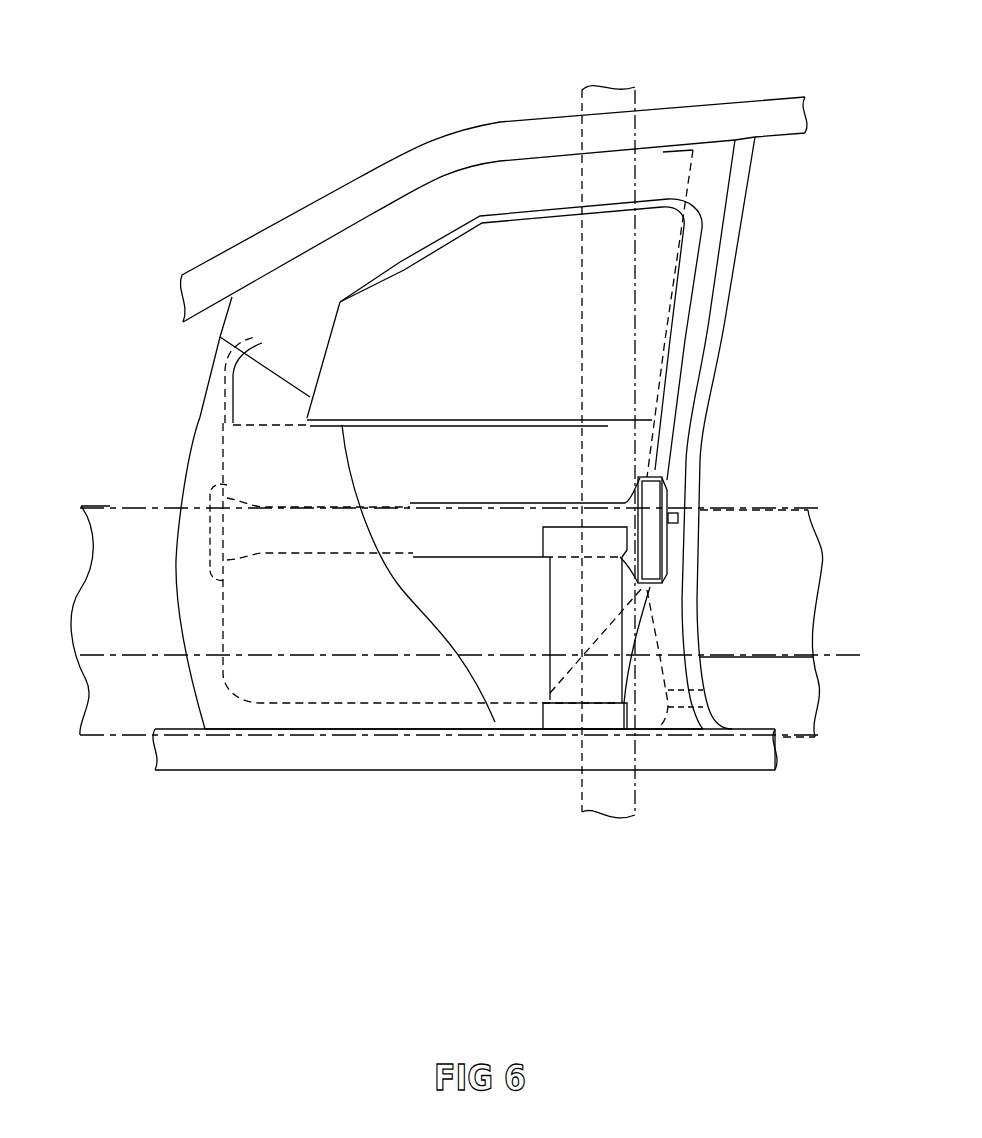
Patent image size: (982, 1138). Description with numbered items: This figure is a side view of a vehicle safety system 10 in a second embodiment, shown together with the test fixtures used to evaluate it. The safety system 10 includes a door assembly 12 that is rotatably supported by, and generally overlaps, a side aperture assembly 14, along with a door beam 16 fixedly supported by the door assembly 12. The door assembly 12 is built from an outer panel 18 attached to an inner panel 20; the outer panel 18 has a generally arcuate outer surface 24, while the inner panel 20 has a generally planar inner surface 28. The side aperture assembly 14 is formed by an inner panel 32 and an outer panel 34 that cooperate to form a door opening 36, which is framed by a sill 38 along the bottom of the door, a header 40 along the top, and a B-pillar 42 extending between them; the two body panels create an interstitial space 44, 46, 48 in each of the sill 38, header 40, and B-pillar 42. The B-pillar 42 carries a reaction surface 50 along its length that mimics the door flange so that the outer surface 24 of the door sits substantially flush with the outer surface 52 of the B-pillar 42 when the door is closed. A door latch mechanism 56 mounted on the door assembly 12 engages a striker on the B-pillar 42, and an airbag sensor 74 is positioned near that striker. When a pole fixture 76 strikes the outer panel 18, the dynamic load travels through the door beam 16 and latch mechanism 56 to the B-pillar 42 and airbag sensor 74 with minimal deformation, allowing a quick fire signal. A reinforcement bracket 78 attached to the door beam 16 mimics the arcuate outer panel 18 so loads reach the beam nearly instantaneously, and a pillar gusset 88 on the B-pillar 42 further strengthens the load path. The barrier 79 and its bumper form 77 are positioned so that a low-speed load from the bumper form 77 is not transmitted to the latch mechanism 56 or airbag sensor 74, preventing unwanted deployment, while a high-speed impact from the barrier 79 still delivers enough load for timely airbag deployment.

The vehicle safety system 10 is at (570, 470).
The door assembly 12 is at (262, 268).
The side aperture assembly 14 is at (748, 130).
The door beam 16 is at (500, 565).
The outer panel 18 is at (370, 632).
The inner panel 20 is at (497, 460).
The outer surface 24 is at (272, 630).
The planar inner surface 28 is at (450, 455).
The inner panel 32 is at (733, 205).
The outer panel 34 is at (708, 672).
The door opening 36 is at (667, 150).
The sill 38 is at (520, 753).
The header 40 is at (483, 132).
The B-pillar 42 is at (708, 360).
The interstitial space 44 is at (442, 753).
The interstitial space 46 is at (377, 182).
The interstitial space 48 is at (703, 400).
The reaction surface 50 is at (705, 290).
The outer surface 52 is at (665, 432).
The door latch mechanism 56 is at (643, 465).
The airbag sensor 74 is at (682, 516).
The pole fixture 76 is at (582, 95).
The bumper form 77 is at (115, 710).
The reinforcement bracket 78 is at (555, 613).
The barrier 79 is at (115, 518).
The pillar gusset 88 is at (687, 697).